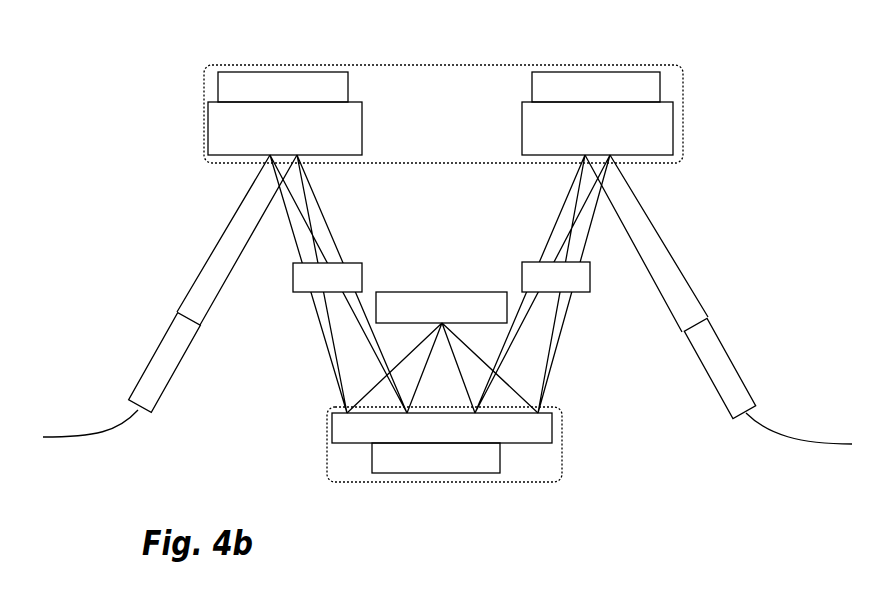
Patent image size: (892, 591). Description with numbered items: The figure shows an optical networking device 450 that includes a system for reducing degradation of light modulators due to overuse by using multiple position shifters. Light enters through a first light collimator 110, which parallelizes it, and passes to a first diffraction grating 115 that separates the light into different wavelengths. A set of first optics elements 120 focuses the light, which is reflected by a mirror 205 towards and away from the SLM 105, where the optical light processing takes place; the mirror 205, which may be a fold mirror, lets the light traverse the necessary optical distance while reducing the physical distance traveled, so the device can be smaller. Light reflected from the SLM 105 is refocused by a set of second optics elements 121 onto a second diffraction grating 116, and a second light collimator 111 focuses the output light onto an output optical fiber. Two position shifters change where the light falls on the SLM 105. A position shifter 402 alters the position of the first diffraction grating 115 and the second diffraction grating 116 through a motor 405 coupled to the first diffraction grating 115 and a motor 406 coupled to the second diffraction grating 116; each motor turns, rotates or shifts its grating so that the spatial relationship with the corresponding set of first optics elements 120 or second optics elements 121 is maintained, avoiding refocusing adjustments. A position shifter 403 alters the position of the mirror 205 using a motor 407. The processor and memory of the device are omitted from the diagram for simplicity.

The optical networking device 450 is at (149, 39).
The position shifter 402 is at (637, 65).
The position shifter 403 is at (561, 457).
The motor 405 is at (550, 72).
The motor 406 is at (233, 72).
The motor 407 is at (398, 473).
The first diffraction grating 115 is at (530, 102).
The second diffraction grating 116 is at (217, 102).
The set of first optics elements 120 is at (591, 283).
The set of second optics elements 121 is at (293, 278).
The SLM 105 is at (456, 292).
The first light collimator 110 is at (728, 350).
The second light collimator 111 is at (152, 352).
The mirror 205 is at (553, 425).